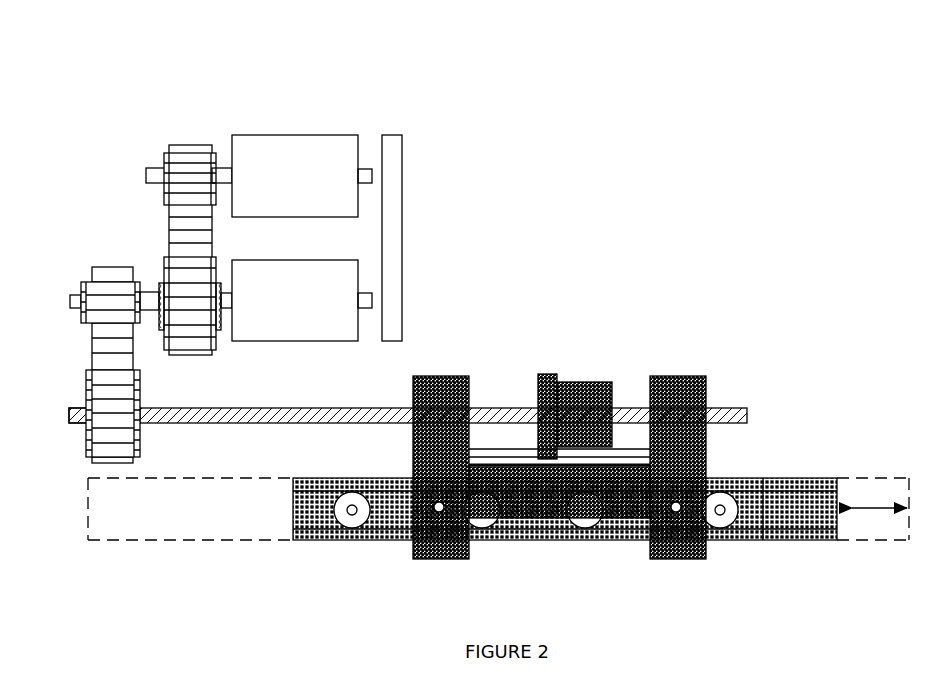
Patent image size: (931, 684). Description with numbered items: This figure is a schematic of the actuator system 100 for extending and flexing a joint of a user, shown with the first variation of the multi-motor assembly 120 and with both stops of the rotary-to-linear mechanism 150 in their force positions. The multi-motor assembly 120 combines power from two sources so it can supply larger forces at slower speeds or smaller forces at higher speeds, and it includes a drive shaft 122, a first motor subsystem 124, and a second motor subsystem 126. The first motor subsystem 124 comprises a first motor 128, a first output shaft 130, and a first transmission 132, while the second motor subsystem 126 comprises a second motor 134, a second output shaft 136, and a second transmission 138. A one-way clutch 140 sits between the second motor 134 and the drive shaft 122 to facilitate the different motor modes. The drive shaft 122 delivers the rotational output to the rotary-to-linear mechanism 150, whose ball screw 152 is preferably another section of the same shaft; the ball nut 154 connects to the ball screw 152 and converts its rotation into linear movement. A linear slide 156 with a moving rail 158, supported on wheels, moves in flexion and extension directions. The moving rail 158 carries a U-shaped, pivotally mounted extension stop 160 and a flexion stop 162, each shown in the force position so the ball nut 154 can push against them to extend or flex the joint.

The actuator system 100 is at (702, 141).
The multi-motor assembly 120 is at (438, 189).
The drive shaft 122 is at (74, 416).
The first motor subsystem 124 is at (290, 354).
The second motor subsystem 126 is at (307, 126).
The first motor 128 is at (277, 342).
The first output shaft 130 is at (80, 300).
The first transmission 132 is at (102, 244).
The second motor 134 is at (268, 134).
The second output shaft 136 is at (147, 174).
The second transmission 138 is at (190, 126).
The one-way clutch 140 is at (160, 294).
The rotary-to-linear mechanism 150 is at (705, 276).
The ball screw 152 is at (746, 413).
The ball nut 154 is at (578, 378).
The linear slide 156 is at (748, 575).
The moving rail 158 is at (800, 478).
The extension stop 160 is at (432, 559).
The flexion stop 162 is at (678, 560).